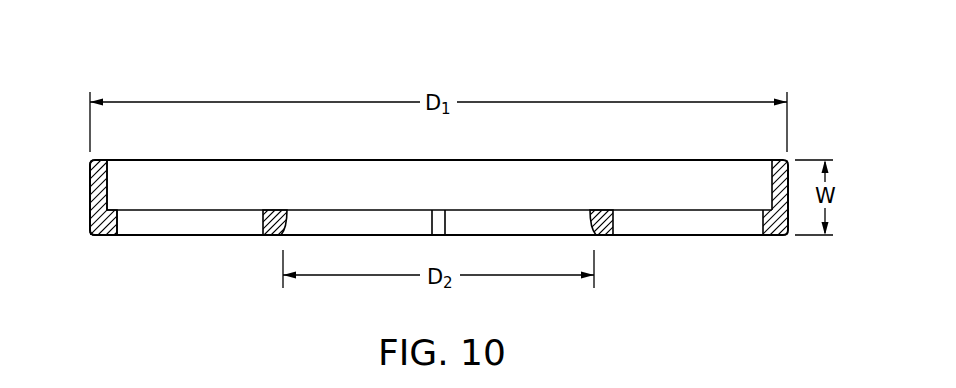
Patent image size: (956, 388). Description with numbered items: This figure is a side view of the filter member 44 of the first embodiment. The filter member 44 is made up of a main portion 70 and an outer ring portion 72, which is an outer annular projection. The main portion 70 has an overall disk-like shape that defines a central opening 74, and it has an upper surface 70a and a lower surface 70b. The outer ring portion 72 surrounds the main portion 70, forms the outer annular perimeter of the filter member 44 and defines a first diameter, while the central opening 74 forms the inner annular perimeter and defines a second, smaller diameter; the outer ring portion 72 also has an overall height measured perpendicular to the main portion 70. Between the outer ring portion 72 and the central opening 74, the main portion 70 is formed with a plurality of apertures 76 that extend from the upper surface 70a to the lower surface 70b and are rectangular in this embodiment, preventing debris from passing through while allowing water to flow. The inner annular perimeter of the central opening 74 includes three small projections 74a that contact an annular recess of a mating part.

The filter member 44 is at (612, 52).
The main portion 70 is at (200, 210).
The upper surface 70a is at (278, 210).
The lower surface 70b is at (601, 236).
The outer ring portion 72 is at (95, 192).
The central opening 74 is at (362, 226).
The small projections 74a is at (437, 223).
The apertures 76 is at (172, 222).